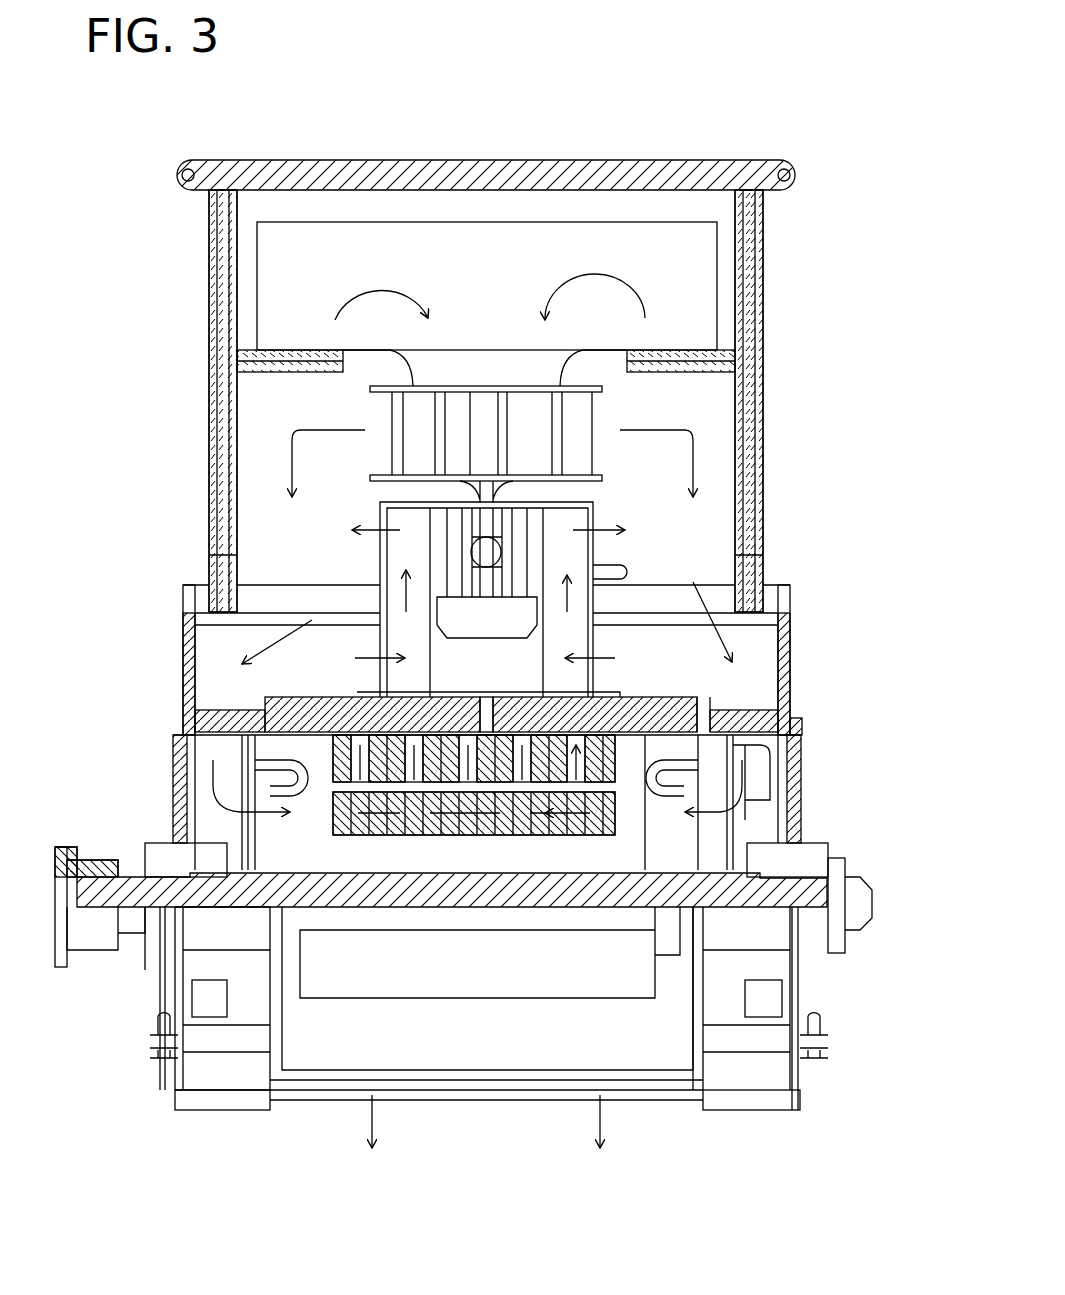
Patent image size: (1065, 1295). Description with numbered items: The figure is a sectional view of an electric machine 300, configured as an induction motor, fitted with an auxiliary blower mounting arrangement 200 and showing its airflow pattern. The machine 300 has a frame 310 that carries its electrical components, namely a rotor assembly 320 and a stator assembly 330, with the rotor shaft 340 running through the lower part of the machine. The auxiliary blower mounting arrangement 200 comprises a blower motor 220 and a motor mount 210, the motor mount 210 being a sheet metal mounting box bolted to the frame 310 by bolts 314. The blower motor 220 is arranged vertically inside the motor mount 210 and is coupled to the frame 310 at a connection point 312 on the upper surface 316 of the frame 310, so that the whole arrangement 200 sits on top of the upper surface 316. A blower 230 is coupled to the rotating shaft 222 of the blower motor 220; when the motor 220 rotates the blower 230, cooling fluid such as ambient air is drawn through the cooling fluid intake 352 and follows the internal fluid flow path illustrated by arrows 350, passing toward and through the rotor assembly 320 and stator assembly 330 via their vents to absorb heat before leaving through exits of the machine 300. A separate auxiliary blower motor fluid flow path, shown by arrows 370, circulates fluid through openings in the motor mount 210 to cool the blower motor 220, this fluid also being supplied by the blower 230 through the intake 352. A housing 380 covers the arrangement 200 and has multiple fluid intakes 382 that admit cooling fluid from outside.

The electric machine 300 is at (658, 108).
The housing 380 is at (232, 293).
The fluid intakes 382 is at (288, 262).
The cooling fluid intake 352 is at (485, 366).
The blower 230 is at (575, 418).
The rotating shaft 222 is at (492, 490).
The auxiliary blower mounting arrangement 200 is at (358, 568).
The motor mount 210 is at (400, 606).
The blower motor 220 is at (500, 551).
The auxiliary blower motor fluid flow path 370 is at (372, 526).
The internal fluid flow path 350 is at (592, 278).
The upper surface 316 is at (330, 697).
The bolts 314 is at (605, 697).
The connection point 312 is at (487, 706).
The frame 310 is at (795, 745).
The stator assembly 330 is at (345, 762).
The rotor assembly 320 is at (345, 822).
The rotor shaft 340 is at (480, 887).